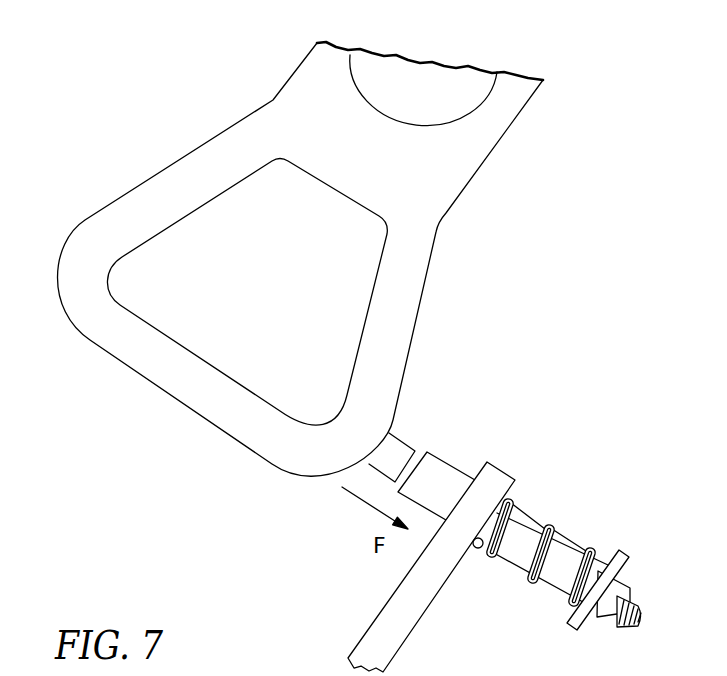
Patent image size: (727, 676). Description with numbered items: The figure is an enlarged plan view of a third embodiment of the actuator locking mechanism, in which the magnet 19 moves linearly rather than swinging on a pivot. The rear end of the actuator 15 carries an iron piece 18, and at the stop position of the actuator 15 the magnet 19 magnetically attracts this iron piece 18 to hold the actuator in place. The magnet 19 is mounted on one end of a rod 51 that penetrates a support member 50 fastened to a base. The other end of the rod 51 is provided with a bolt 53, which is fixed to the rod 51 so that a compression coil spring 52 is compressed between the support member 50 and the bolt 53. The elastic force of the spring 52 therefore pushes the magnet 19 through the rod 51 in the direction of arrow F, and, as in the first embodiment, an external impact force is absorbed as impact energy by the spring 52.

The actuator 15 is at (432, 265).
The iron piece 18 is at (402, 448).
The magnet 19 is at (447, 470).
The support member 50 is at (407, 623).
The rod 51 is at (523, 557).
The compression coil spring 52 is at (547, 520).
The bolt 53 is at (628, 574).